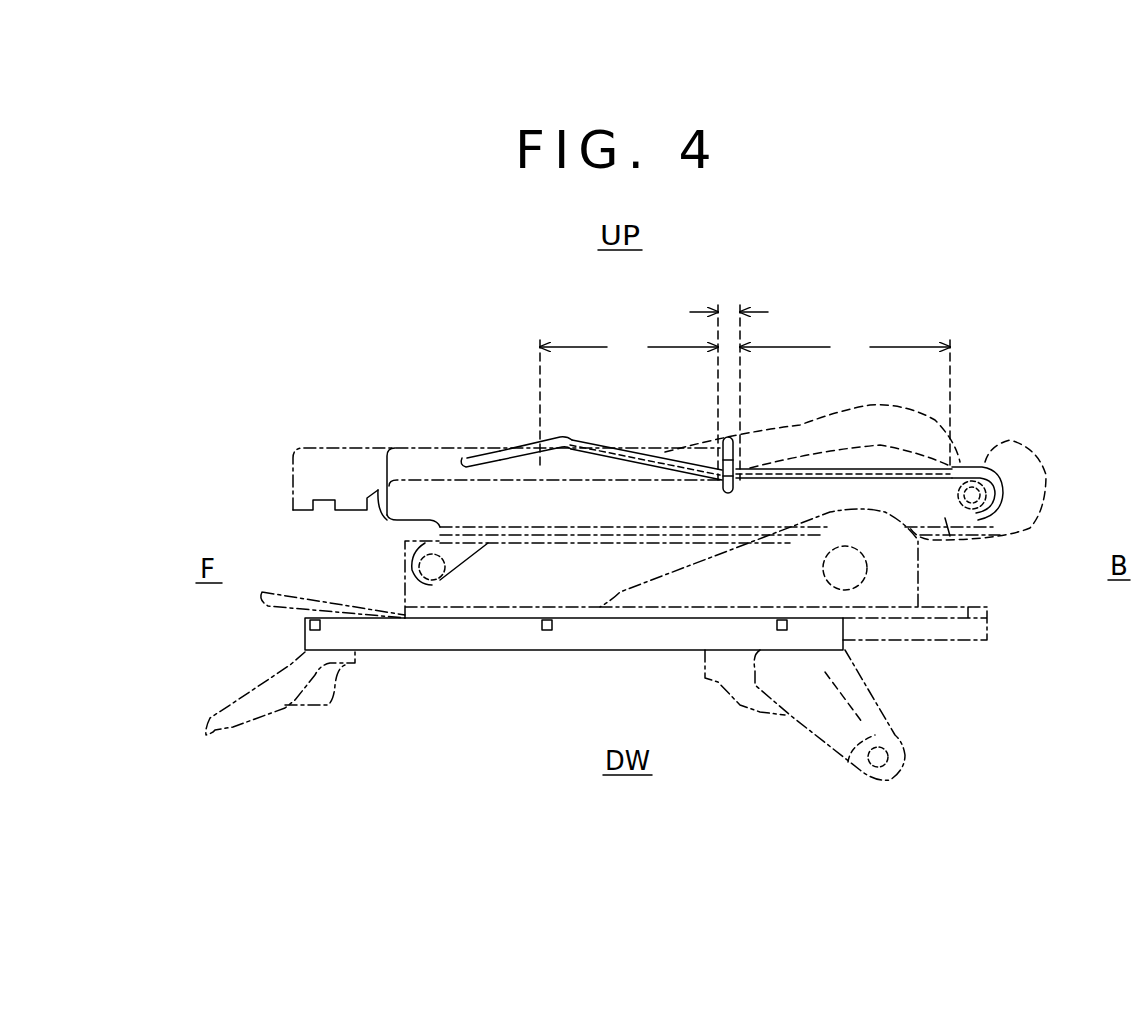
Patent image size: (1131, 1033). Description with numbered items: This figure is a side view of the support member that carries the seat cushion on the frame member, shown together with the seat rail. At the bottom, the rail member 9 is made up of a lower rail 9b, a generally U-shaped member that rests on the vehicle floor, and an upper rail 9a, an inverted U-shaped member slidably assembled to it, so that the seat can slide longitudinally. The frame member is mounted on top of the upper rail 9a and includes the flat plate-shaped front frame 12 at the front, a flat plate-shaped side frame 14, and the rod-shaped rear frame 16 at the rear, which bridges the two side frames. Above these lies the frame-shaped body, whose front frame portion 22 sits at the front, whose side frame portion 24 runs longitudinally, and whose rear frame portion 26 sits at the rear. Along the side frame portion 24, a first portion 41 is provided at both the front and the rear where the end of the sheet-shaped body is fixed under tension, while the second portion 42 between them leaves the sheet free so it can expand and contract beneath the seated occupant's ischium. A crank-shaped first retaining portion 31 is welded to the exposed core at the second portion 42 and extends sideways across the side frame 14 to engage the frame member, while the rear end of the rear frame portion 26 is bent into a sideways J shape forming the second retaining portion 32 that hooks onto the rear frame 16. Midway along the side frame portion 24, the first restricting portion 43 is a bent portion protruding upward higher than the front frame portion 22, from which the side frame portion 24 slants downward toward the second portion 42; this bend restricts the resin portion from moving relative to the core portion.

The rail member 9 is at (681, 683).
The upper rail 9a is at (975, 640).
The lower rail 9b is at (952, 636).
The front frame 12 is at (330, 470).
The side frame 14 is at (940, 515).
The rear frame 16 is at (1012, 470).
The front frame portion 22 is at (468, 460).
The side frame portion 24 is at (612, 452).
The rear frame portion 26 is at (985, 466).
The first retaining portion 31 is at (737, 466).
The second retaining portion 32 is at (1006, 496).
The first portion 41 is at (745, 392).
The second portion 42 is at (729, 291).
The first restricting portion 43 is at (566, 438).